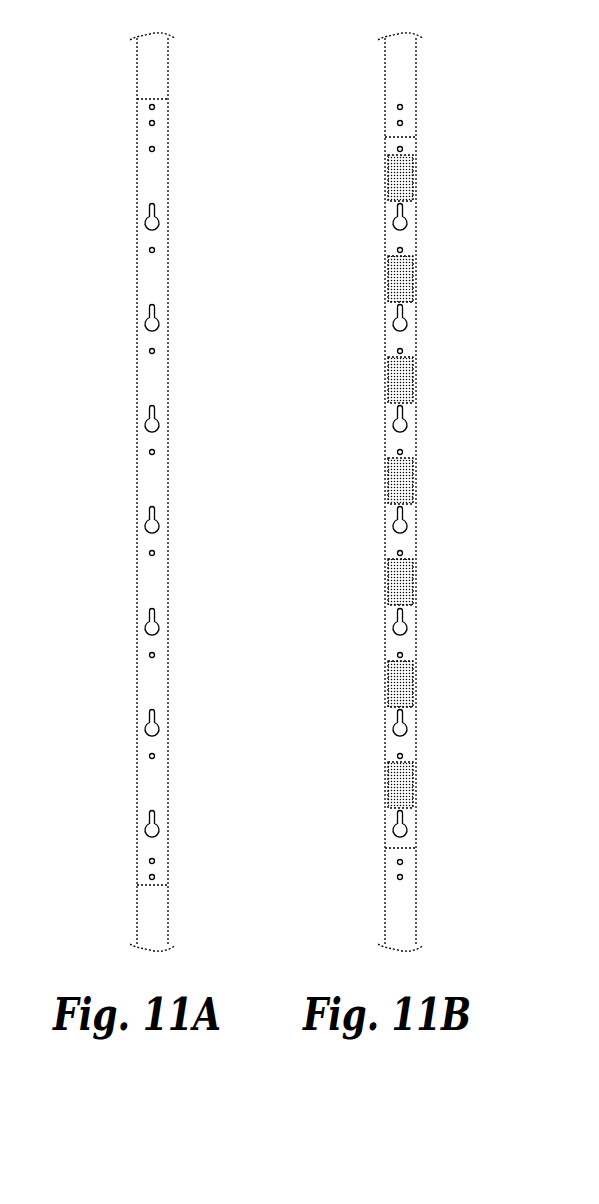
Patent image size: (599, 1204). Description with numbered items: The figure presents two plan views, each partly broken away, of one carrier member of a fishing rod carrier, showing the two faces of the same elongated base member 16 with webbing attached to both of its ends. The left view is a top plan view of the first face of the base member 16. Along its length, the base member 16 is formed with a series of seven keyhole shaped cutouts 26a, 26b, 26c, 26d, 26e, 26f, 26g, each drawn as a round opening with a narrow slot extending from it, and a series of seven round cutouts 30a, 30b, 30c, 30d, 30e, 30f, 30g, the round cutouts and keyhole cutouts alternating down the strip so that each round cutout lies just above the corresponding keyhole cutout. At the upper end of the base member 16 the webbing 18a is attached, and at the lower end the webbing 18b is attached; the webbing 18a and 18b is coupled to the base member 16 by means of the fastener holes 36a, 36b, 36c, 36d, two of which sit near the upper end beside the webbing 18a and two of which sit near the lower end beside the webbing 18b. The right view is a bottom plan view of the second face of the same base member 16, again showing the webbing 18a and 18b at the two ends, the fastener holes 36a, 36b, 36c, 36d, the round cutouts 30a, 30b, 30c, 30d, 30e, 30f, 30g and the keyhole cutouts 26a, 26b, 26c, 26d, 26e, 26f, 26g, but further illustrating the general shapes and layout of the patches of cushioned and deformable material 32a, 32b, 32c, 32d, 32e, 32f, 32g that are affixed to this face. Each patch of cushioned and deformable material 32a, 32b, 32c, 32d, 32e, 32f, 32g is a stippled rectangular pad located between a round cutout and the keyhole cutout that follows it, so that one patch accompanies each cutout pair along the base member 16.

In FIG. 11A, the base member 16 is at (163, 238).
In FIG. 11B, the base member 16 is at (402, 237).
In FIG. 11A, the webbing 18a is at (147, 73).
In FIG. 11B, the webbing 18a is at (397, 70).
In FIG. 11A, the webbing 18b is at (147, 926).
In FIG. 11B, the webbing 18b is at (395, 917).
In FIG. 11A, the keyhole shaped cutout 26a is at (145, 222).
In FIG. 11B, the keyhole shaped cutout 26a is at (393, 222).
In FIG. 11A, the keyhole shaped cutout 26b is at (145, 323).
In FIG. 11B, the keyhole shaped cutout 26b is at (393, 323).
In FIG. 11A, the keyhole shaped cutout 26c is at (145, 424).
In FIG. 11B, the keyhole shaped cutout 26c is at (393, 424).
In FIG. 11A, the keyhole shaped cutout 26d is at (145, 525).
In FIG. 11B, the keyhole shaped cutout 26d is at (393, 525).
In FIG. 11A, the keyhole shaped cutout 26e is at (145, 627).
In FIG. 11B, the keyhole shaped cutout 26e is at (393, 627).
In FIG. 11A, the keyhole shaped cutout 26f is at (145, 728).
In FIG. 11B, the keyhole shaped cutout 26f is at (393, 728).
In FIG. 11A, the keyhole shaped cutout 26g is at (145, 829).
In FIG. 11B, the keyhole shaped cutout 26g is at (393, 829).
In FIG. 11A, the round cutout 30a is at (148, 149).
In FIG. 11B, the round cutout 30a is at (396, 149).
In FIG. 11A, the round cutout 30b is at (148, 250).
In FIG. 11B, the round cutout 30b is at (396, 250).
In FIG. 11A, the round cutout 30c is at (148, 351).
In FIG. 11B, the round cutout 30c is at (396, 351).
In FIG. 11A, the round cutout 30d is at (148, 452).
In FIG. 11B, the round cutout 30d is at (396, 452).
In FIG. 11A, the round cutout 30e is at (148, 553).
In FIG. 11B, the round cutout 30e is at (396, 553).
In FIG. 11A, the round cutout 30f is at (148, 655).
In FIG. 11B, the round cutout 30f is at (396, 655).
In FIG. 11A, the round cutout 30g is at (148, 756).
In FIG. 11B, the round cutout 30g is at (396, 756).
In FIG. 11B, the cushioned and deformable material 32a is at (396, 179).
In FIG. 11B, the cushioned and deformable material 32b is at (396, 280).
In FIG. 11B, the cushioned and deformable material 32c is at (396, 381).
In FIG. 11B, the cushioned and deformable material 32d is at (396, 482).
In FIG. 11B, the cushioned and deformable material 32e is at (396, 583).
In FIG. 11B, the cushioned and deformable material 32f is at (396, 685).
In FIG. 11B, the cushioned and deformable material 32g is at (396, 786).
In FIG. 11A, the fastener hole 36a is at (149, 107).
In FIG. 11B, the fastener hole 36a is at (397, 107).
In FIG. 11A, the fastener hole 36b is at (149, 123).
In FIG. 11B, the fastener hole 36b is at (397, 123).
In FIG. 11A, the fastener hole 36c is at (149, 861).
In FIG. 11B, the fastener hole 36c is at (397, 862).
In FIG. 11A, the fastener hole 36d is at (149, 878).
In FIG. 11B, the fastener hole 36d is at (397, 878).